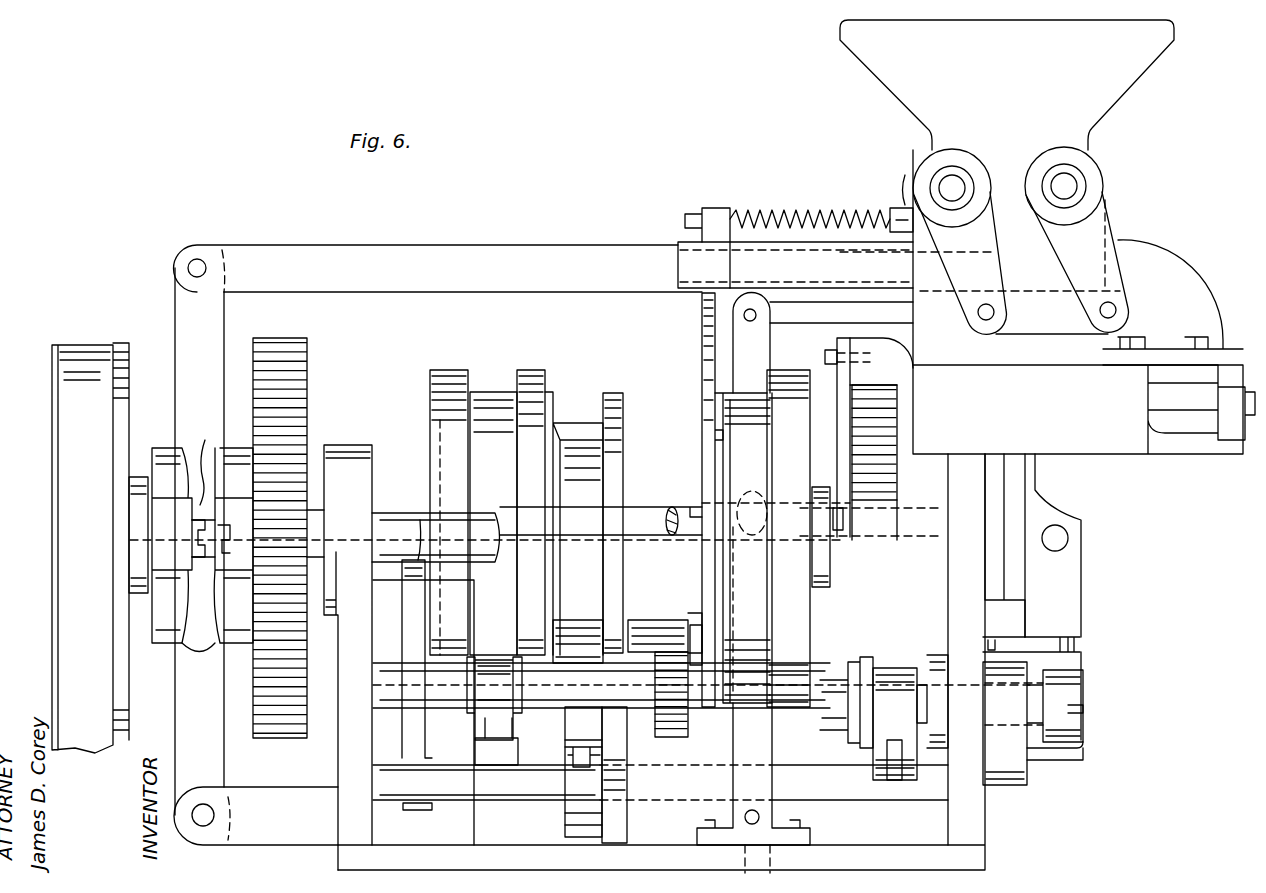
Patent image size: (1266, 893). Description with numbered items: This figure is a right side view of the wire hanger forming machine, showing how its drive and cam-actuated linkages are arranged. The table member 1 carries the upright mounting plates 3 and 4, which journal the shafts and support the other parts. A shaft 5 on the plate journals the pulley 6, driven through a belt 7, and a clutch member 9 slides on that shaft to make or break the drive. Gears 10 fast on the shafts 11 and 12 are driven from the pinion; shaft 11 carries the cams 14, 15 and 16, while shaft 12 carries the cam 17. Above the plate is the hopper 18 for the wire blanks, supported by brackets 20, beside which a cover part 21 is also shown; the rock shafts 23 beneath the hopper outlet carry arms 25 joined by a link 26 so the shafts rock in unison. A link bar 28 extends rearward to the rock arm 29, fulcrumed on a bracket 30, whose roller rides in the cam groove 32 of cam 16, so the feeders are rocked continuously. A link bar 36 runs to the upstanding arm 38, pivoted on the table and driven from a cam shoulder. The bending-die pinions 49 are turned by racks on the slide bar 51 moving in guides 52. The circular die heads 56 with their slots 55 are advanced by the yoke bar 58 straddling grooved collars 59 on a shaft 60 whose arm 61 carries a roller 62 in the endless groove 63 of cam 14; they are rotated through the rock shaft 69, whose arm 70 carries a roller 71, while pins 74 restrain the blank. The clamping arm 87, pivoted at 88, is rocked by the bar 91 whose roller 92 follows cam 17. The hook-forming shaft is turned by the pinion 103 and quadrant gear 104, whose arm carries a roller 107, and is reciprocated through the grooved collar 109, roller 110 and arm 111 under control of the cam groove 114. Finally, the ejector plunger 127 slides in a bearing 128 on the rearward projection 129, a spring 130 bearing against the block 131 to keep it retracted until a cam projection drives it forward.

The table member 1 is at (985, 857).
The upright mounting plate 3 is at (975, 625).
The upright mounting plate 4 is at (352, 757).
The shaft 5 is at (202, 481).
The pulley 6 is at (52, 490).
The belt 7 is at (75, 522).
The clutch member 9 is at (165, 465).
The gears 10 is at (307, 368).
The shaft 11 is at (645, 565).
The shaft 12 is at (495, 575).
The cam 14 is at (623, 404).
The cam 15 is at (540, 385).
The cam 16 is at (235, 440).
The cam 17 is at (810, 612).
The hopper 18 is at (900, 95).
The brackets 20 is at (1030, 360).
The cover 21 is at (1140, 250).
The rock shafts 23 is at (952, 188).
The arms 25 is at (1045, 248).
The link 26 is at (1024, 262).
The link bar 28 is at (545, 250).
The rock arm 29 is at (224, 332).
The bracket 30 is at (256, 816).
The cam groove 32 is at (207, 635).
The link bar 36 is at (843, 300).
The upstanding arm 38 is at (770, 370).
The pinions 49 is at (897, 470).
The slide bar 51 is at (895, 390).
The guides 52 is at (860, 360).
The slots 55 is at (1083, 708).
The circular die heads 56 is at (1075, 690).
The yoke bar 58 is at (890, 668).
The grooved collars 59 is at (858, 655).
The shaft 60 is at (618, 775).
The upstanding arm 61 is at (590, 700).
The roller 62 is at (583, 640).
The endless groove 63 is at (587, 408).
The rock shaft 69 is at (455, 803).
The rock arm 70 is at (405, 597).
The roller 71 is at (420, 520).
The pins 74 is at (1050, 768).
The clamping arm 87 is at (1035, 495).
The pivot 88 is at (1062, 530).
The bar 91 is at (672, 485).
The roller 92 is at (748, 500).
The pinion 103 is at (688, 715).
The quadrant gear 104 is at (672, 648).
The roller 107 is at (697, 637).
The grooved collar 109 is at (492, 648).
The roller 110 is at (520, 735).
The arm 111 is at (512, 818).
The cam groove 114 is at (468, 385).
The plunger 127 is at (755, 250).
The bearing 128 is at (912, 165).
The rearward projection 129 is at (770, 235).
The spring 130 is at (870, 205).
The block 131 is at (718, 208).